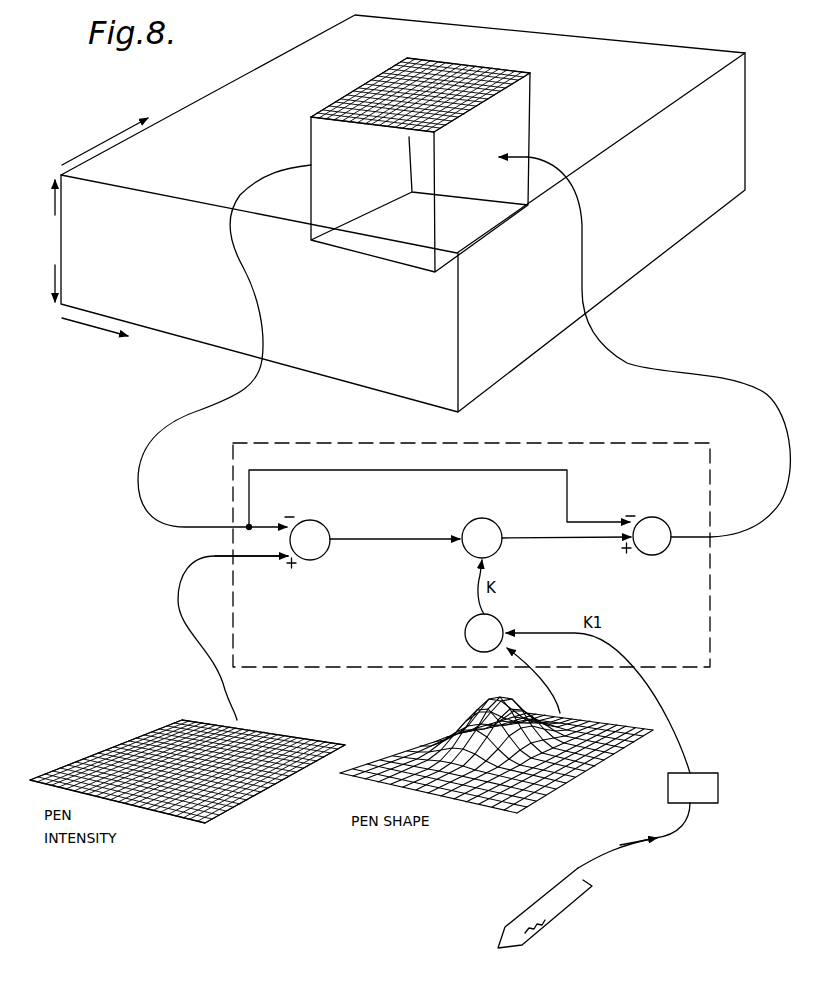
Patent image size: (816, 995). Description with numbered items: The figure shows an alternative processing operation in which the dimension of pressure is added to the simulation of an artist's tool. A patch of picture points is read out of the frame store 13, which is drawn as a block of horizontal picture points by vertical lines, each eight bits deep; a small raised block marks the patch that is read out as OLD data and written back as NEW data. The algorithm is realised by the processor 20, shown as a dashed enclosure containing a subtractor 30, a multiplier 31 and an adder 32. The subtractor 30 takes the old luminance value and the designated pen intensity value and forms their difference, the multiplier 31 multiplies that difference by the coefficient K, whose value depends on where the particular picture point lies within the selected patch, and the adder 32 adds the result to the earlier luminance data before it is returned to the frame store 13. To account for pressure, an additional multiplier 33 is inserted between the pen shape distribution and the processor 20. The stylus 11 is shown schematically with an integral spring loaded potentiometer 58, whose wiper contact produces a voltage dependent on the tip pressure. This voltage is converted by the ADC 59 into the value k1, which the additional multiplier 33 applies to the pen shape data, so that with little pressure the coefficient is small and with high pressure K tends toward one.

The stylus 11 is at (590, 892).
The frame store 13 is at (712, 188).
The processor 20 is at (695, 443).
The subtractor 30 is at (322, 525).
The multiplier 31 is at (497, 522).
The adder 32 is at (667, 520).
The additional multiplier 33 is at (500, 618).
The spring loaded potentiometer 58 is at (540, 928).
The ADC 59 is at (710, 803).